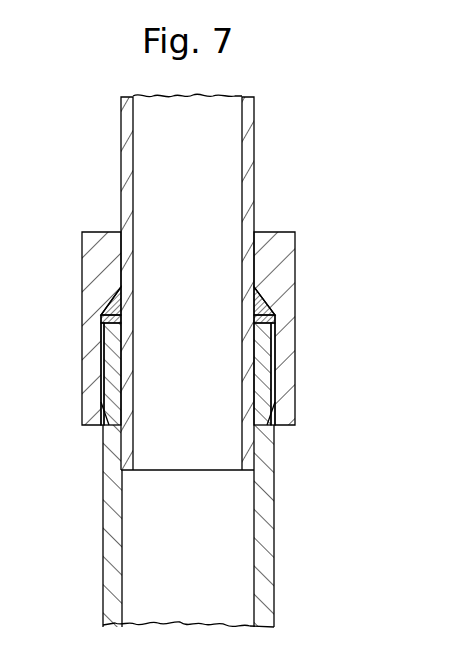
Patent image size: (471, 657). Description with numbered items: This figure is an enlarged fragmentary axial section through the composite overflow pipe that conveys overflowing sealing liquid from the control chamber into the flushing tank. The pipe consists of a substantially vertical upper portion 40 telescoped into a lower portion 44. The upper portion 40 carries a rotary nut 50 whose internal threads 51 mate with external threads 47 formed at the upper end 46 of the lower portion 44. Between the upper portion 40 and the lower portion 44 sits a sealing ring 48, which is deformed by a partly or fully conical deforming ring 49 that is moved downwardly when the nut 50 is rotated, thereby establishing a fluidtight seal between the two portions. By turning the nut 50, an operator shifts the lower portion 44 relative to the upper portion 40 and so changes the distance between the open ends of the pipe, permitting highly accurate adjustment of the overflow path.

The upper portion 40 is at (252, 153).
The lower portion 44 is at (260, 450).
The upper end 46 is at (262, 355).
The external threads 47 is at (271, 403).
The sealing ring 48 is at (264, 320).
The deforming ring 49 is at (259, 302).
The rotary nut 50 is at (273, 237).
The internal threads 51 is at (270, 375).